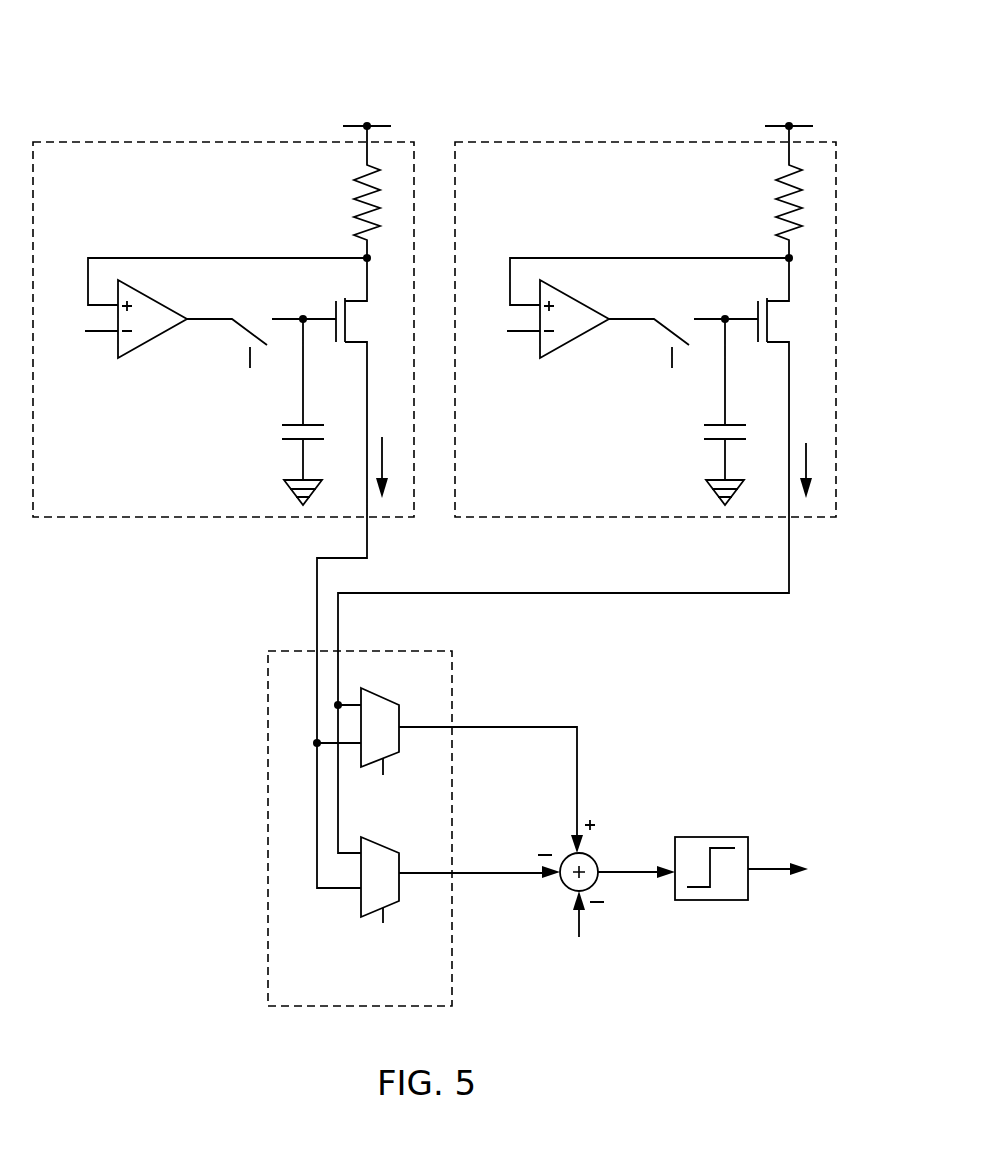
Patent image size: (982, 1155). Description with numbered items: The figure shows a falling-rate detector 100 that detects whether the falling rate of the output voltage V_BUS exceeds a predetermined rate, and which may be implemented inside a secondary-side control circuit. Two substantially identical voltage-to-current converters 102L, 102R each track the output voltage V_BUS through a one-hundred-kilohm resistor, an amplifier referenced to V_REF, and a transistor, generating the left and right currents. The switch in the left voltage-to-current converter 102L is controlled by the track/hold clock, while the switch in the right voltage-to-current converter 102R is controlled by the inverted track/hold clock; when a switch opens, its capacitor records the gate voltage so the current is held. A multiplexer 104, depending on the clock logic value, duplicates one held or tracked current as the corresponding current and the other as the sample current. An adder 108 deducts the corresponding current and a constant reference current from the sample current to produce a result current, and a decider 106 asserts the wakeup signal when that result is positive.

The falling-rate detector 100 is at (430, 83).
The voltage-to-current converter 102L is at (92, 173).
The voltage-to-current converter 102R is at (516, 173).
The multiplexer 104 is at (268, 713).
The decider 106 is at (733, 837).
The adder 108 is at (560, 880).